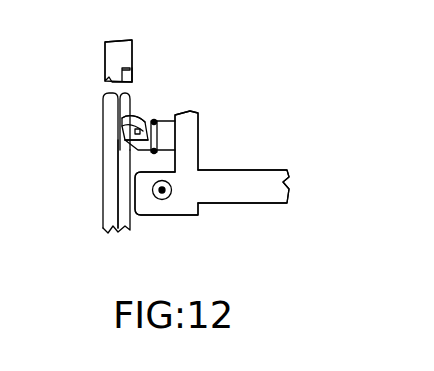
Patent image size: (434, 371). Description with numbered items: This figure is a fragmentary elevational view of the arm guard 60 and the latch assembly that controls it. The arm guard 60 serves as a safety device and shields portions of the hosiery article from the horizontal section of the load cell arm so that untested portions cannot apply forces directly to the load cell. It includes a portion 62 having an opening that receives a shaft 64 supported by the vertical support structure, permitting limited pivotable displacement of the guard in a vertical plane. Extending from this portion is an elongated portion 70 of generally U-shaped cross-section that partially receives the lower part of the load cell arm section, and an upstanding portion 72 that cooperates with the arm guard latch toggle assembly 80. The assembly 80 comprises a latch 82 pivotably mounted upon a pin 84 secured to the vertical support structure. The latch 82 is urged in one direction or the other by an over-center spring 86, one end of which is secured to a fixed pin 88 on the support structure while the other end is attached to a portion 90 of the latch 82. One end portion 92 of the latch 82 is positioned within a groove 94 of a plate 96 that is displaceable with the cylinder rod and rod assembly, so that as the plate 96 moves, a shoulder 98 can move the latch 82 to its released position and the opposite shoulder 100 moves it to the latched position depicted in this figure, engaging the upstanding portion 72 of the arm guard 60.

The arm guard 60 is at (264, 169).
The portion 62 is at (190, 206).
The shaft 64 is at (162, 200).
The elongated portion 70 is at (272, 196).
The upstanding portion 72 is at (190, 122).
The arm guard latch toggle assembly 80 is at (163, 80).
The latch 82 is at (140, 119).
The pin 84 is at (150, 150).
The over-center spring 86 is at (150, 148).
The fixed pin 88 is at (150, 158).
The portion of the latch 90 is at (157, 120).
The end portion of the latch 92 is at (124, 126).
The groove 94 is at (108, 72).
The plate 96 is at (115, 52).
The shoulder 98 is at (131, 72).
The shoulder 100 is at (123, 126).